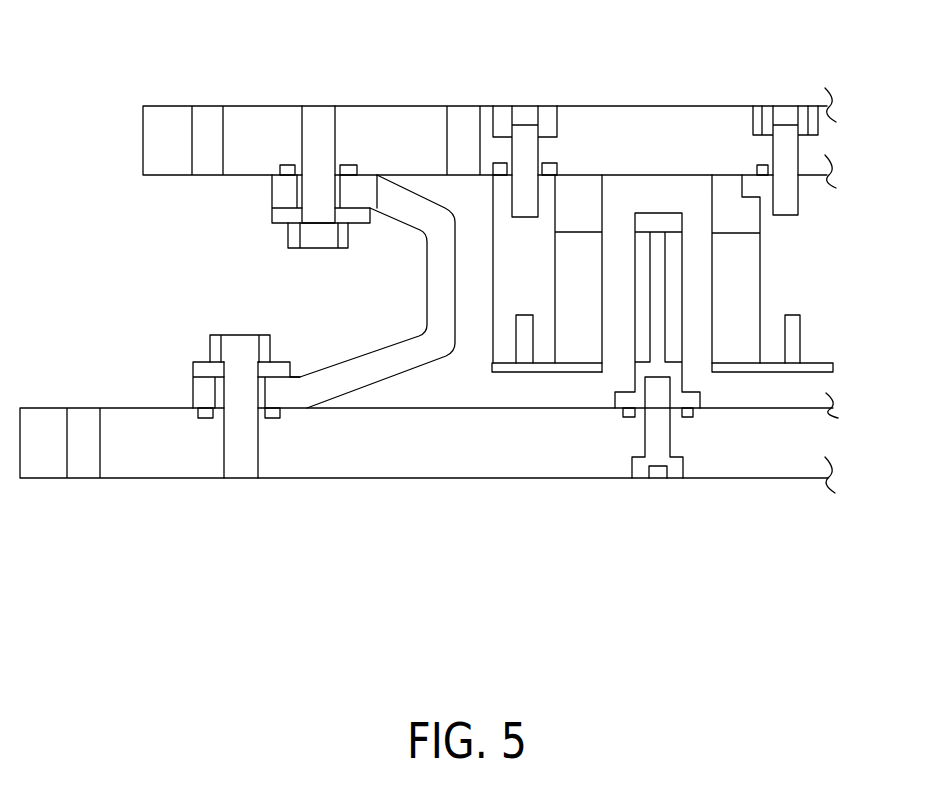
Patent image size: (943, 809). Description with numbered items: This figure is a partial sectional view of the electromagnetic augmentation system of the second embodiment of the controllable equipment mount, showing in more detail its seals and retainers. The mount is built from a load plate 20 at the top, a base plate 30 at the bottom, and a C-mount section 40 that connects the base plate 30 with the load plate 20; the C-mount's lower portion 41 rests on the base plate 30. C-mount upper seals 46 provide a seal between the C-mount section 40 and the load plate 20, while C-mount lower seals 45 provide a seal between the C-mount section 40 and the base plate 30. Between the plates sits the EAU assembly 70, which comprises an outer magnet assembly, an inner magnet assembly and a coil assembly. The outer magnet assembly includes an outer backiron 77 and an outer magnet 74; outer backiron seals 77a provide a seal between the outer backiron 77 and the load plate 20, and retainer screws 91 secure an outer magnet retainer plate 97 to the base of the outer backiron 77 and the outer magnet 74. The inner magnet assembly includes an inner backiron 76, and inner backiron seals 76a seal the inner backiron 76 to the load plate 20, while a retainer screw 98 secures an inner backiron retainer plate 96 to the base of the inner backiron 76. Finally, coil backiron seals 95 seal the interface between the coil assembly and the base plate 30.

The load plate 20 is at (633, 123).
The base plate 30 is at (795, 463).
The C-mount section 40 is at (425, 313).
The bracket 41 is at (370, 365).
The C-mount lower seals 45 is at (205, 418).
The C-mount upper seals 46 is at (348, 167).
The EAU assembly 70 is at (828, 560).
The outer magnet 74 is at (588, 282).
The inner backiron 76 is at (797, 281).
The inner backiron seals 76a is at (757, 167).
The outer backiron 77 is at (490, 242).
The outer backiron seals 77a is at (550, 165).
The retainer screws 91 is at (523, 340).
The coil backiron seals 95 is at (629, 417).
The inner backiron retainer plate 96 is at (762, 372).
The outer magnet retainer plate 97 is at (525, 373).
The retainer screw 98 is at (793, 345).